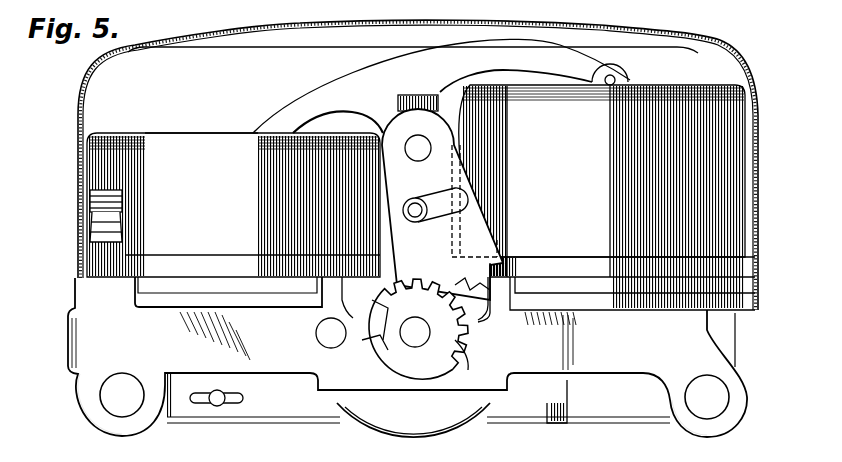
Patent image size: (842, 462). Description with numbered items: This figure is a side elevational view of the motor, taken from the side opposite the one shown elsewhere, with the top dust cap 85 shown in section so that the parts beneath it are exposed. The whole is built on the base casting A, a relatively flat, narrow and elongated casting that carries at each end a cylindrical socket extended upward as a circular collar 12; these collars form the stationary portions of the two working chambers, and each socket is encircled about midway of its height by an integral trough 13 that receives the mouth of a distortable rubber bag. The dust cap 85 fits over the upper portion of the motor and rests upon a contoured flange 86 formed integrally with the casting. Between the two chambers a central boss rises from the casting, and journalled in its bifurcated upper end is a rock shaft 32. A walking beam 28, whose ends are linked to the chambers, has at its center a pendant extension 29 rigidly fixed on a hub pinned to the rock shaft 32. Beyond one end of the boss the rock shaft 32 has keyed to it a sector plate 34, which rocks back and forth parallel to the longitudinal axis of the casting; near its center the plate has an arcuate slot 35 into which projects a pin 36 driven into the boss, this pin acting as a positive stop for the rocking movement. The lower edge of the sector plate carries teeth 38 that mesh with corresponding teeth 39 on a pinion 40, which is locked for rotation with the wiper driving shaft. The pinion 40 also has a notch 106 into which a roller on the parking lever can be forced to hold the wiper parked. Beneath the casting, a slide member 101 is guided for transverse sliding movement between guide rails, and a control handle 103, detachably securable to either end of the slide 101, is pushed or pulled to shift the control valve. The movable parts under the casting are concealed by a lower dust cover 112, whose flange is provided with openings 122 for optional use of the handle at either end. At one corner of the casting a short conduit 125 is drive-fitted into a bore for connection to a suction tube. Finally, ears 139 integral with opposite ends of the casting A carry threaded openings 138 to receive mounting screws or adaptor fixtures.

The dust cap 85 is at (78, 113).
The circular collar 12 is at (175, 133).
The integral trough 13 is at (210, 265).
The flange 86 is at (752, 302).
The short conduit 125 is at (96, 200).
The walking beam 28 is at (335, 88).
The pendant extension 29 is at (378, 116).
The sector plate 34 is at (460, 168).
The rock shaft 32 is at (418, 148).
The arcuate slot 35 is at (462, 218).
The pin 36 is at (415, 204).
The teeth 38 is at (445, 282).
The slide member 101 is at (422, 315).
The notch 106 is at (380, 346).
The teeth 39 is at (472, 312).
The pinion 40 is at (440, 366).
The threaded opening 138 is at (100, 400).
The ear 139 is at (140, 426).
The control handle 103 is at (243, 398).
The opening 122 is at (215, 392).
The dust cover 112 is at (569, 407).
The base casting A is at (66, 333).